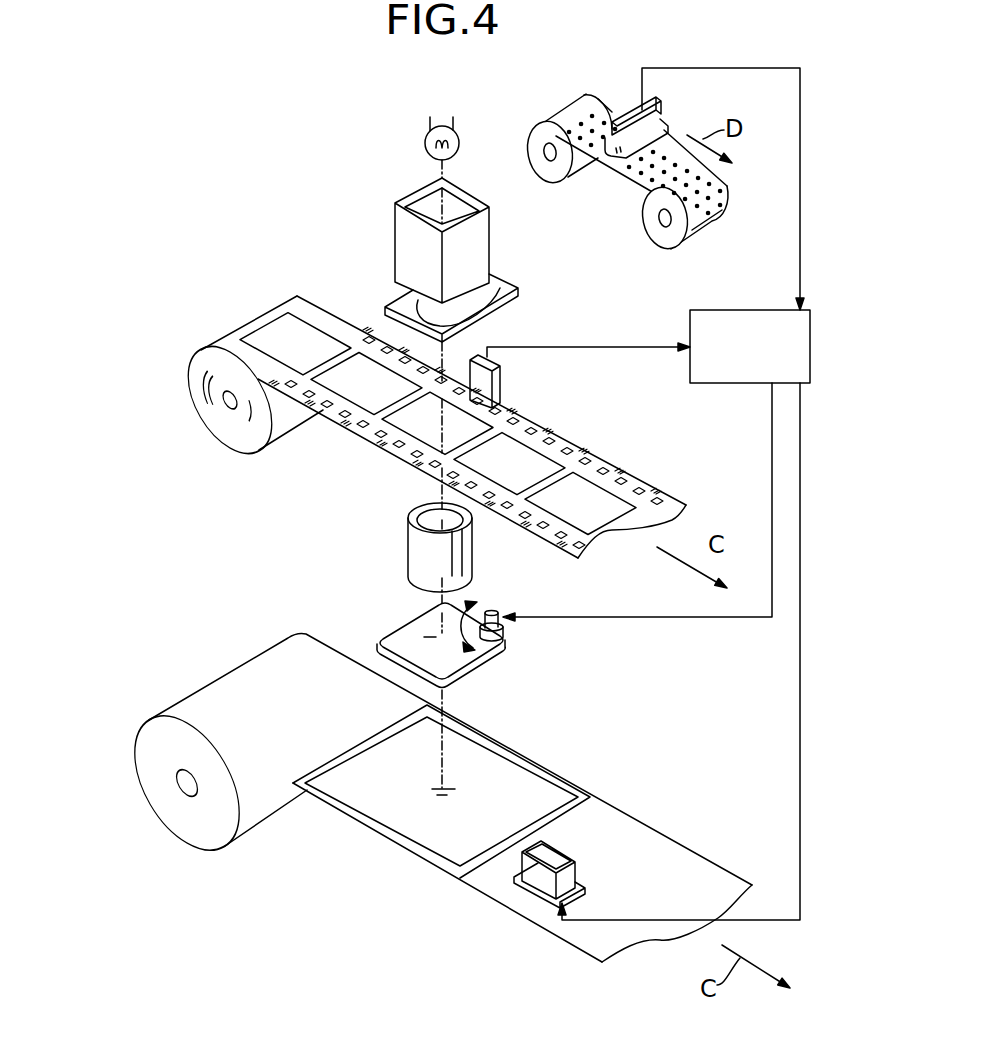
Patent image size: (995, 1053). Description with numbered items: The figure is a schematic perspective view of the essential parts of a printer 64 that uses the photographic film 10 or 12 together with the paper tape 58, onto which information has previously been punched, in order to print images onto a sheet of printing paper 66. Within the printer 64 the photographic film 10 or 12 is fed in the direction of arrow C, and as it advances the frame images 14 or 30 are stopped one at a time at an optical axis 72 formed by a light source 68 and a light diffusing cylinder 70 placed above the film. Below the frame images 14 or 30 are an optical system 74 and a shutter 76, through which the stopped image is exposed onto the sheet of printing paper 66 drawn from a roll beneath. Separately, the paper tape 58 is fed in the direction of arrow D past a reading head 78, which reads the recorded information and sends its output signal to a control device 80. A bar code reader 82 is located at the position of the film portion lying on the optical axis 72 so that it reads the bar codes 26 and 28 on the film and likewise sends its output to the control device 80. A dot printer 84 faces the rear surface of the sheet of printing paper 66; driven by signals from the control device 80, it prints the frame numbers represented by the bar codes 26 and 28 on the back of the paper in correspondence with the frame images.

The photographic film 10 is at (486, 427).
The photographic film 12 is at (486, 427).
The frame images 14 is at (366, 384).
The frame images 30 is at (277, 387).
The bar codes 26 is at (578, 445).
The bar codes 28 is at (545, 425).
The paper tape 58 is at (645, 175).
The printer 64 is at (362, 203).
The sheet of printing paper 66 is at (670, 838).
The light source 68 is at (459, 142).
The light diffusing cylinder 70 is at (478, 260).
The optical axis 72 is at (440, 707).
The optical system 74 is at (472, 556).
The shutter 76 is at (452, 662).
The reading head 78 is at (663, 122).
The control device 80 is at (748, 310).
The bar code reader 82 is at (500, 382).
The dot printer 84 is at (576, 878).